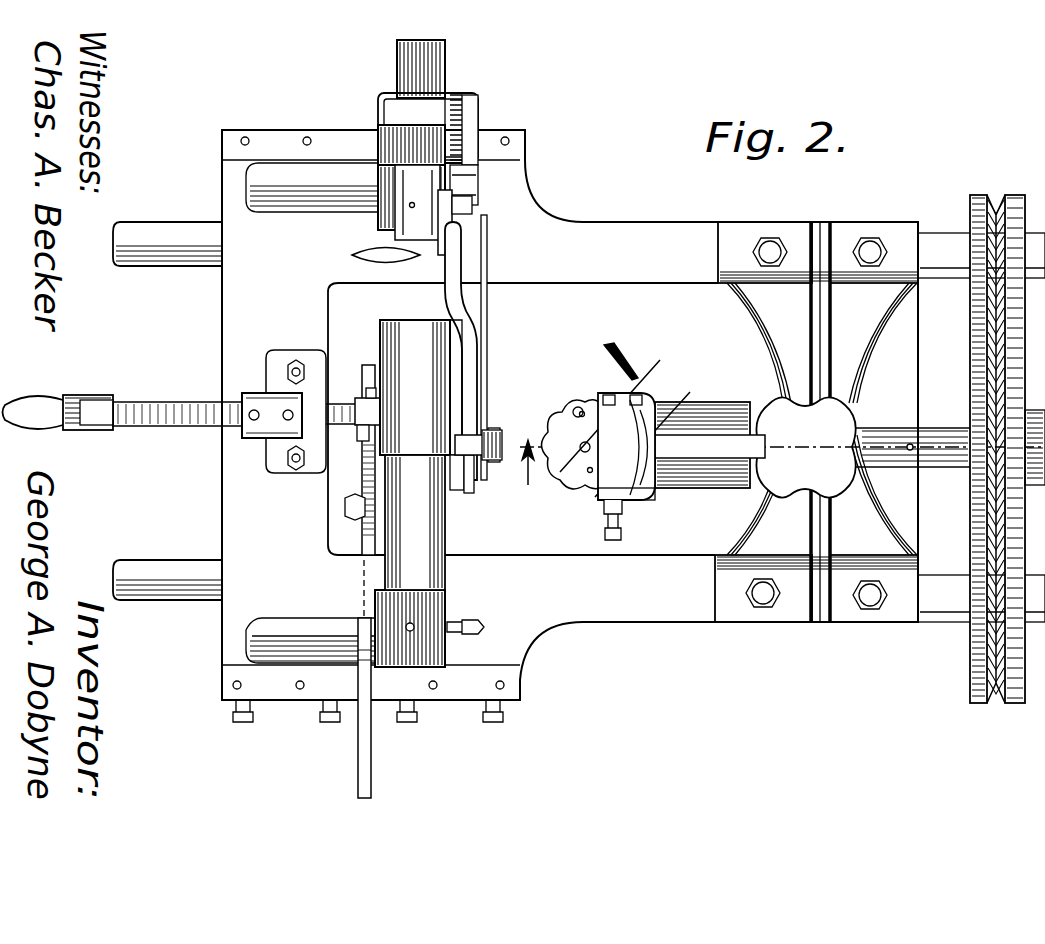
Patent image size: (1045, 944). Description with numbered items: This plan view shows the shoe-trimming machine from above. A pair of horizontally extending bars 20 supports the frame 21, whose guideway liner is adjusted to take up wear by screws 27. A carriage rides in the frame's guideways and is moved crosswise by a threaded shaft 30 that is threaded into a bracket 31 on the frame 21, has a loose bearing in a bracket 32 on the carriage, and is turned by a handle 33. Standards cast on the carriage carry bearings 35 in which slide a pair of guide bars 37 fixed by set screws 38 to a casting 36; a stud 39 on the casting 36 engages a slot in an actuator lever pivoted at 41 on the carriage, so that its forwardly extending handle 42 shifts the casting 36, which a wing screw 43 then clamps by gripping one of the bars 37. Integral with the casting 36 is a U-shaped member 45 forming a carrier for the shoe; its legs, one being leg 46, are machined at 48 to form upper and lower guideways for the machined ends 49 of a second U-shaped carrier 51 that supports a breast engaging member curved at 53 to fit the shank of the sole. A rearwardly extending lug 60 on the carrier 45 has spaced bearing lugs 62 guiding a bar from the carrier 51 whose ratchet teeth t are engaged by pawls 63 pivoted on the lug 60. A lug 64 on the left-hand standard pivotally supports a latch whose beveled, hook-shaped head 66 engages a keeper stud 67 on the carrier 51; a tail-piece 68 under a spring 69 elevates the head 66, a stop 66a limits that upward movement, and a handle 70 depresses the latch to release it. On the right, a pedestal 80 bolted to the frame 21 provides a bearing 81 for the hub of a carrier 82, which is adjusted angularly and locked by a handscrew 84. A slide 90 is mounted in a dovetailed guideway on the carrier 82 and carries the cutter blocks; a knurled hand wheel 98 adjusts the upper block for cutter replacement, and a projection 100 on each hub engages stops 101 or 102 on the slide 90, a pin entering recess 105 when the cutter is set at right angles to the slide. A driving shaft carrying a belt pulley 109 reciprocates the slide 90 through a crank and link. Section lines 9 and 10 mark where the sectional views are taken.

The section line 9 is at (521, 462).
The section line 10 is at (626, 359).
The horizontally extending bars 20 is at (172, 268).
The frame 21 is at (585, 228).
The screws 27 is at (243, 722).
The threaded shaft 30 is at (180, 428).
The bracket 31 is at (258, 438).
The bracket 32 is at (360, 398).
The handle 33 is at (42, 430).
The bearings 35 is at (385, 172).
The casting 36 is at (421, 387).
The guide bars 37 is at (432, 568).
The set screws 38 is at (368, 363).
The stud 39 is at (362, 432).
The pivot 41 is at (348, 512).
The handle 42 is at (358, 758).
The wing screw 43 is at (484, 628).
The member 45 is at (470, 292).
The leg 46 is at (455, 490).
The machined portions 48 is at (468, 493).
The machined end 49 is at (482, 440).
The carrier 51 is at (487, 268).
The curved portion 53 is at (496, 462).
The lug 60 is at (478, 160).
The bearing lugs 62 is at (470, 98).
The pawls 63 is at (470, 110).
The lug 64 is at (400, 190).
The head 66 is at (455, 210).
The stop 66a is at (398, 125).
The keeper stud 67 is at (392, 237).
The tail-piece 68 is at (445, 95).
The spring 69 is at (378, 100).
The handle 70 is at (370, 262).
The pedestal 80 is at (850, 345).
The bearing 81 is at (930, 478).
The carrier 82 is at (690, 445).
The handscrew 84 is at (805, 447).
The slide 90 is at (628, 428).
The knurled hand wheel 98 is at (575, 470).
The projection 100 is at (575, 420).
The stop 101 is at (578, 407).
The stop 102 is at (580, 410).
The recess 105 is at (618, 490).
The belt pulley 109 is at (968, 647).
The ratchet teeth t is at (472, 205).